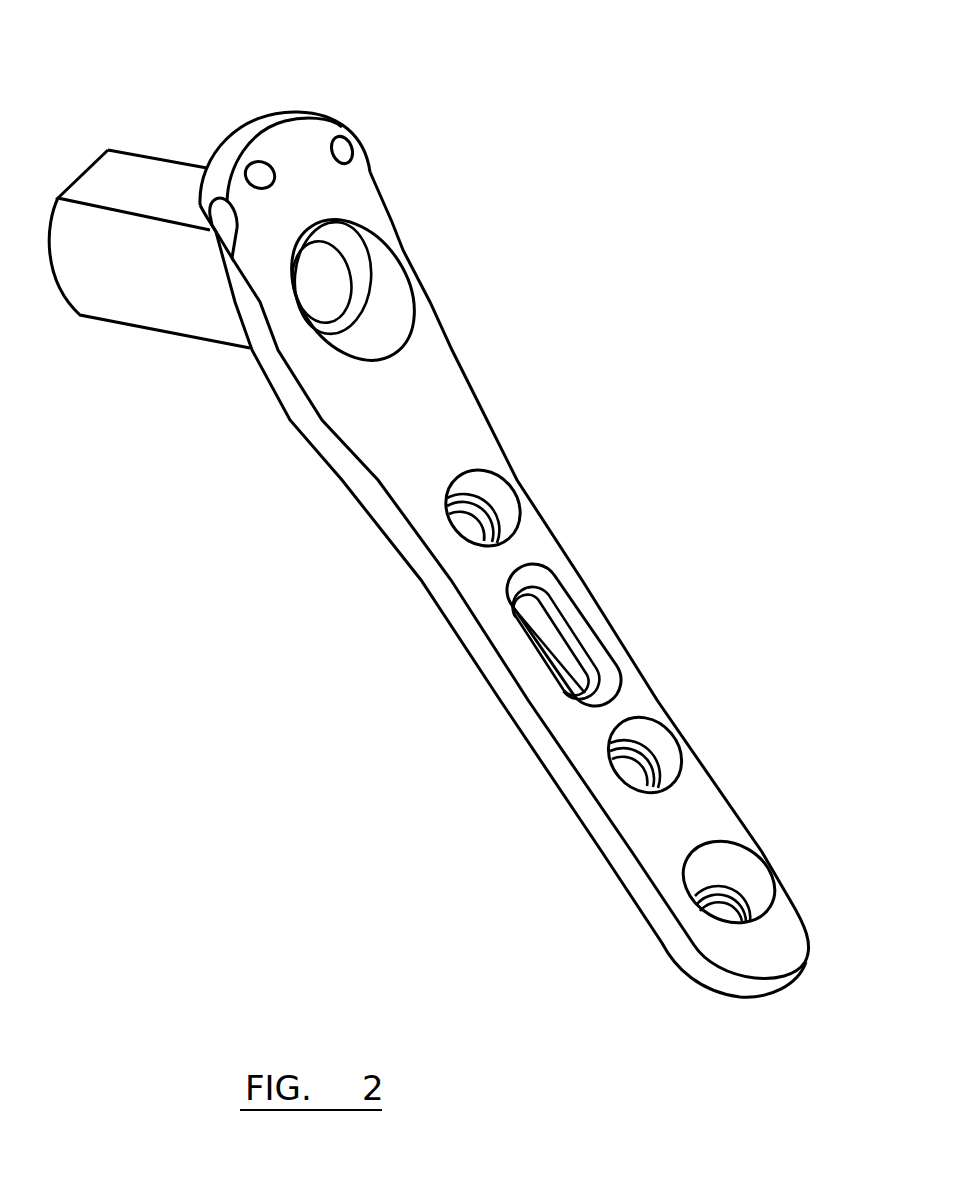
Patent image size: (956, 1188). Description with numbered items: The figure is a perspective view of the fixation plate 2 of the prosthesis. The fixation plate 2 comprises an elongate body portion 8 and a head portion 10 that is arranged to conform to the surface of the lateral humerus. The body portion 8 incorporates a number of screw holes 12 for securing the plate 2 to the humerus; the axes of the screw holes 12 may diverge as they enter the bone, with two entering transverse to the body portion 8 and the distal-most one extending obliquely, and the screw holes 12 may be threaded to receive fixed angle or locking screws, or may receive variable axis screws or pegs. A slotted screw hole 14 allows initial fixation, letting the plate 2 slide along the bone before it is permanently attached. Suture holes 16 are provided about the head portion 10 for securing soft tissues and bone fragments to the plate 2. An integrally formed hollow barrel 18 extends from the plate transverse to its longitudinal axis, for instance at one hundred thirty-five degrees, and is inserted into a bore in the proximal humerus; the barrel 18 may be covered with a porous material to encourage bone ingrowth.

The fixation plate 2 is at (591, 497).
The elongate body portion 8 is at (628, 704).
The head portion 10 is at (342, 193).
The screw holes 12 is at (493, 498).
The slotted screw hole 14 is at (581, 624).
The suture holes 16 is at (213, 237).
The hollow barrel 18 is at (122, 283).